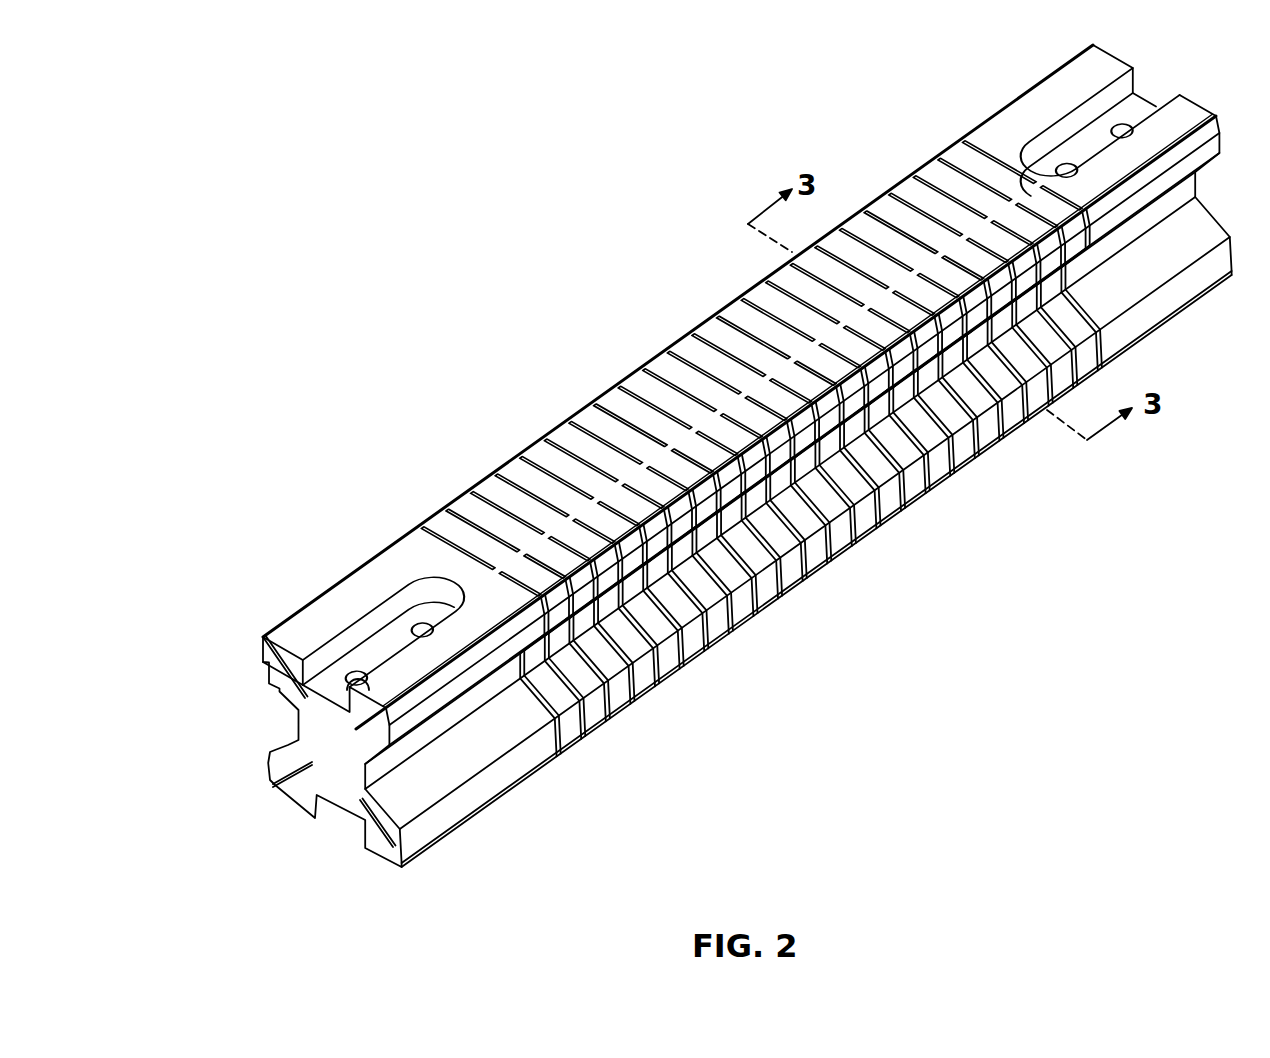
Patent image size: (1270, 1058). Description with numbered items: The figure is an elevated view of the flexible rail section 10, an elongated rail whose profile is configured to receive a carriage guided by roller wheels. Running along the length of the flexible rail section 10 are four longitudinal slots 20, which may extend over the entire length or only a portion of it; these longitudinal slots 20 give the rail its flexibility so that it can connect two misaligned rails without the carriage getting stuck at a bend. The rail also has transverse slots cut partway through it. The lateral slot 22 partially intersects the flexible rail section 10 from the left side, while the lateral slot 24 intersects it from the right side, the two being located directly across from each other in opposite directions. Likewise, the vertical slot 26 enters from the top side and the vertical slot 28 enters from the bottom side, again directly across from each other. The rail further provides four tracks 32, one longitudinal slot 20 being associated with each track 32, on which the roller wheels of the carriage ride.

The flexible rail section 10 is at (706, 478).
The longitudinal slot 20 is at (262, 633).
The lateral slot 22 is at (567, 408).
The lateral slot 24 is at (636, 455).
The vertical slot 26 is at (625, 410).
The vertical slot 28 is at (768, 626).
The track 32 is at (422, 806).